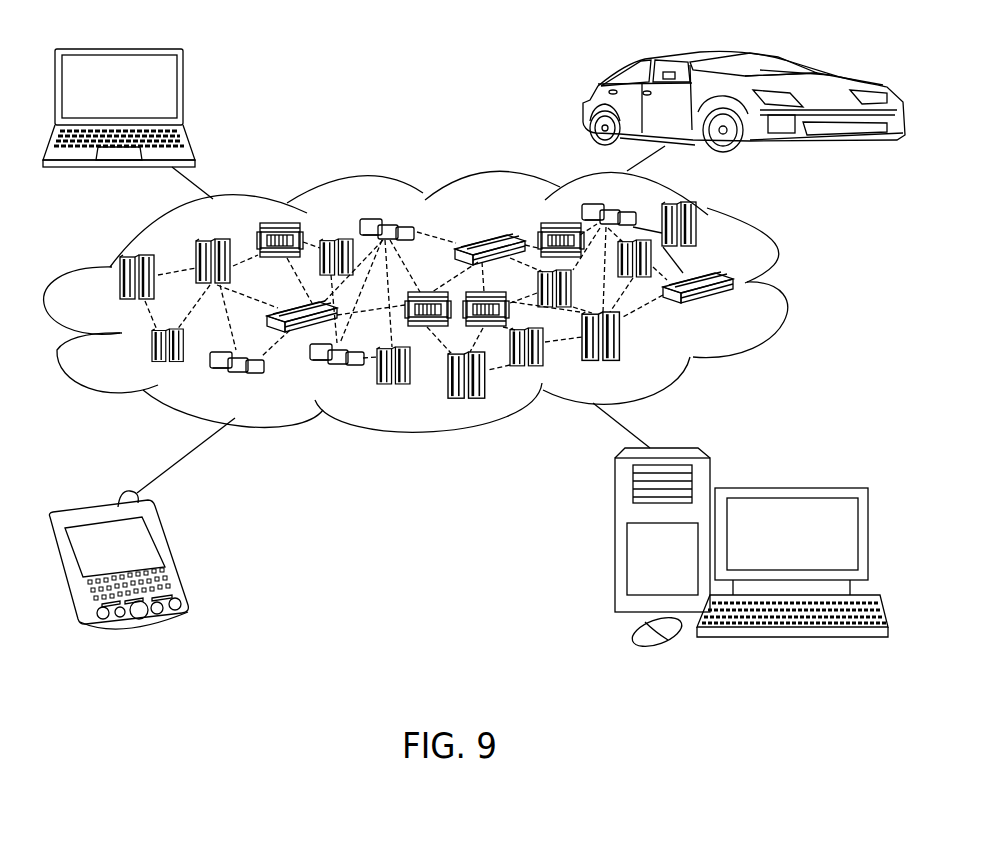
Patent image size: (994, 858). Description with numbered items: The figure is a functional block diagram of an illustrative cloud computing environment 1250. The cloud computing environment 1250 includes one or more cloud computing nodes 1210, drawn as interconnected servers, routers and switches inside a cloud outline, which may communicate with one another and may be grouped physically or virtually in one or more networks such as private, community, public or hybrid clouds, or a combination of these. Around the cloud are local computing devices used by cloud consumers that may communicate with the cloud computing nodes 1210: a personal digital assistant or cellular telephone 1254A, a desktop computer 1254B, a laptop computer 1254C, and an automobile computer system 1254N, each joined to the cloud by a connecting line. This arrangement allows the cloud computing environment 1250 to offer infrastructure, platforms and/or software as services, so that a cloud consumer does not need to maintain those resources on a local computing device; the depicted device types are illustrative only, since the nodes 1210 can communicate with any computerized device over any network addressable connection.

The cloud computing environment 1250 is at (790, 286).
The cloud computing nodes 1210 is at (742, 309).
The laptop computer 1254C is at (184, 97).
The automobile computer system 1254N is at (588, 106).
The personal digital assistant (PDA) or cellular telephone 1254A is at (175, 556).
The desktop computer 1254B is at (798, 472).